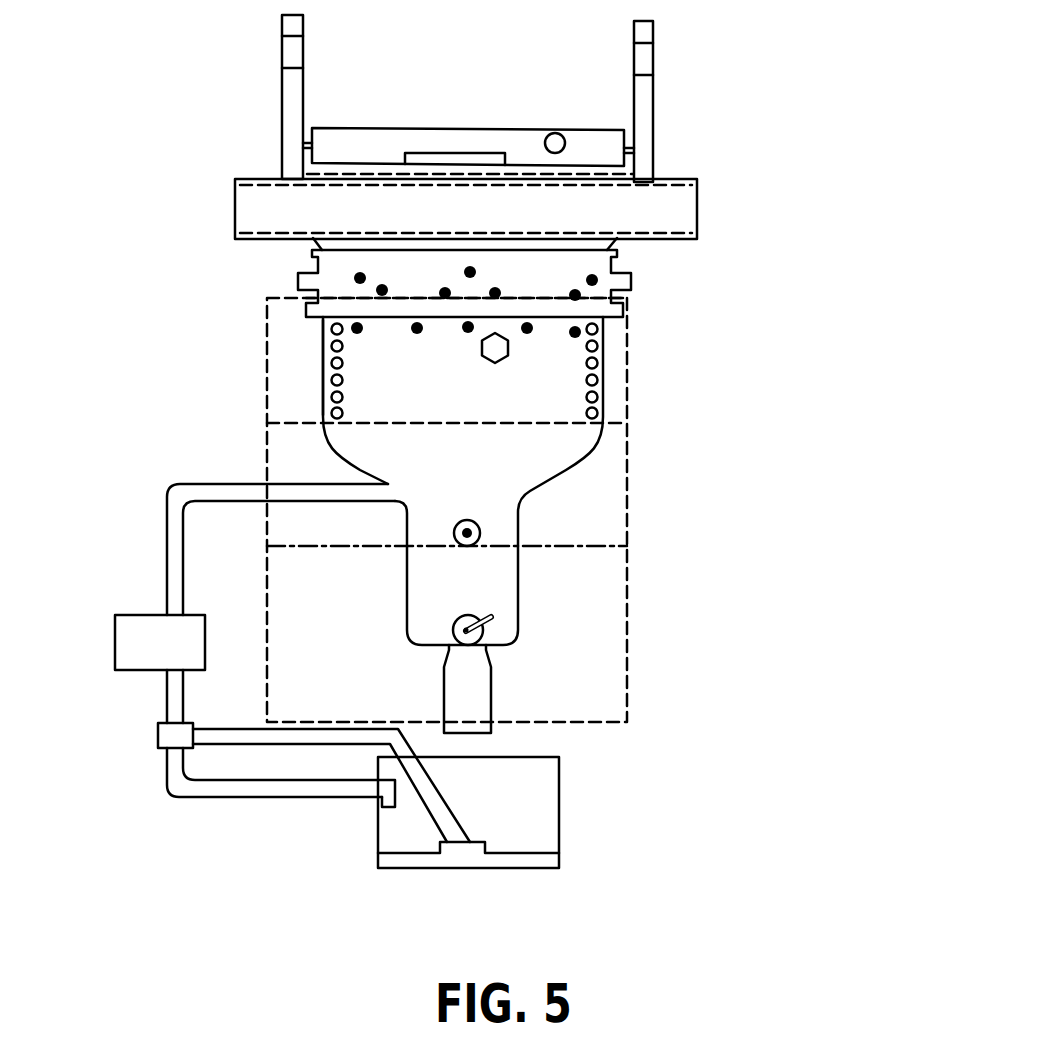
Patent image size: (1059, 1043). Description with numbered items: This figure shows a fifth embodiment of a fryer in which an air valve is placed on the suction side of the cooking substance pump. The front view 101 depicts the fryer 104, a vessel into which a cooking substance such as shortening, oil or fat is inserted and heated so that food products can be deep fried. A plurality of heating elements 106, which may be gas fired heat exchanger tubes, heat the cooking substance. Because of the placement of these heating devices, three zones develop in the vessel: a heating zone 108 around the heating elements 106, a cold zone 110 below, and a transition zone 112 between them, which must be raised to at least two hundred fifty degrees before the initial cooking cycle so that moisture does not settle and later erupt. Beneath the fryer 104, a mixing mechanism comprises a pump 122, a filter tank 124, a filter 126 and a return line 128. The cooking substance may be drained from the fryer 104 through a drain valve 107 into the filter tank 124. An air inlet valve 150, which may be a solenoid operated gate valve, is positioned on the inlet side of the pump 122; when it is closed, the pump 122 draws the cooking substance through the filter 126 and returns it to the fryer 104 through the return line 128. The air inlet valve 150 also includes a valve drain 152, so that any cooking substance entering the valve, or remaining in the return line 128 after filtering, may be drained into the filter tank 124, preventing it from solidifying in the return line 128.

The front view of fryer 101 is at (745, 282).
The fryer 104 is at (323, 330).
The heating elements 106 is at (603, 348).
The drain valve 107 is at (463, 614).
The heating zone 108 is at (265, 397).
The cold zone 110 is at (627, 632).
The transition zone 112 is at (627, 500).
The pump 122 is at (115, 645).
The filter tank 124 is at (559, 797).
The filter 126 is at (474, 868).
The return line 128 is at (166, 540).
The air inlet valve 150 is at (158, 738).
The valve drain 152 is at (317, 800).